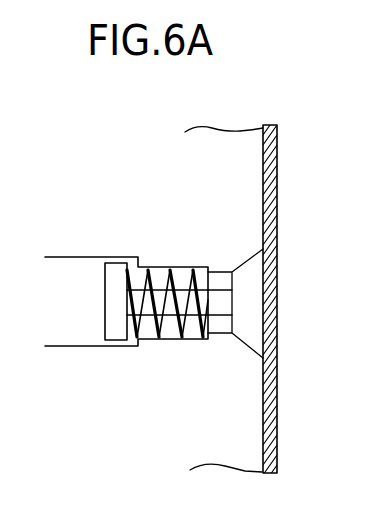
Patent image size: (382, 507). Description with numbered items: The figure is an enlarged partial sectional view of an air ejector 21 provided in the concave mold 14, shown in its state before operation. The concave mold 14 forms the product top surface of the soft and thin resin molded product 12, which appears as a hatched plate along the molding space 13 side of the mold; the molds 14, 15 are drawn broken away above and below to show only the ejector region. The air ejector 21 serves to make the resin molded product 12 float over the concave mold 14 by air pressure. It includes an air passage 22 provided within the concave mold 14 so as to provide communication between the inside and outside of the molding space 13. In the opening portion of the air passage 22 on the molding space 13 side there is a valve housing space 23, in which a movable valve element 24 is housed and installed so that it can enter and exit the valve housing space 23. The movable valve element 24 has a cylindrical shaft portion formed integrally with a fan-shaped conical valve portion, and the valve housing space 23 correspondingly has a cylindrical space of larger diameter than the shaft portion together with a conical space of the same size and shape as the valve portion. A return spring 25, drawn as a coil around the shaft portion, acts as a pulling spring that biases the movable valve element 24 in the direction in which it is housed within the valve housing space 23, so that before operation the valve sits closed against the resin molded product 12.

The soft and thin resin molded product 12 is at (312, 290).
The molding space 13 is at (277, 148).
The concave mold 14 is at (223, 277).
The base member 15 is at (228, 127).
The air ejector 21 is at (292, 257).
The air passage 22 is at (78, 347).
The valve housing space 23 is at (147, 340).
The movable valve element 24 is at (242, 328).
The return spring 25 is at (160, 337).